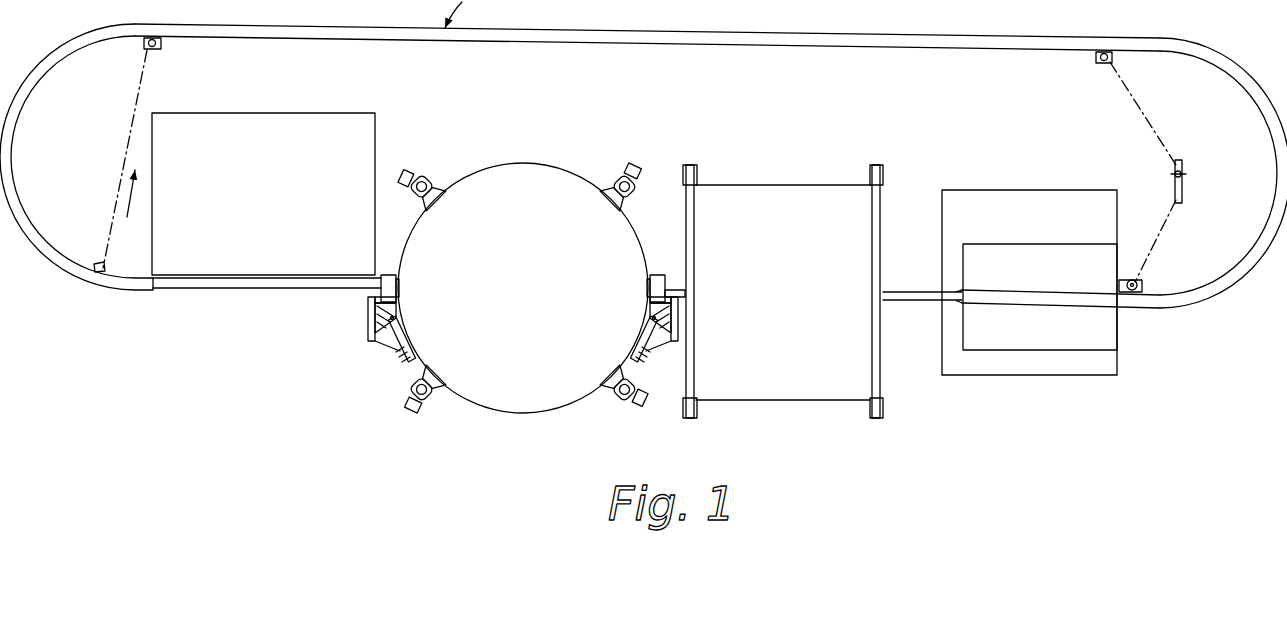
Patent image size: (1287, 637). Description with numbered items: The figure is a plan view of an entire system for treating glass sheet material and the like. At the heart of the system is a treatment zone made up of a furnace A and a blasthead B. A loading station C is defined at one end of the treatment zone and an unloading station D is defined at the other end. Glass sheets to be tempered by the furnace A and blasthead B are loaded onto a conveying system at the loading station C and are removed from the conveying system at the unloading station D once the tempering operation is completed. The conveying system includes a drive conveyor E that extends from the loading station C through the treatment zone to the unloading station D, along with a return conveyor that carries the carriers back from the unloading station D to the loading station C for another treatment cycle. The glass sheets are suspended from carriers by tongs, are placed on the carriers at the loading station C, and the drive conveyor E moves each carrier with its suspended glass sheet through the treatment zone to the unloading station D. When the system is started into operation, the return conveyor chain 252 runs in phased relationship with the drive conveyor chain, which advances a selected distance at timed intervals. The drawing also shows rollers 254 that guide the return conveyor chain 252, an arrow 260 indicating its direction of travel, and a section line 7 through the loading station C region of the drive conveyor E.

The belt guide rollers 254 is at (158, 50).
The return conveyor chain 252 is at (128, 125).
The direction of travel arrow 260 is at (130, 190).
The loading station C is at (360, 112).
The drive conveyor E is at (240, 290).
The section line 7- 7 is at (402, 207).
The furnace A is at (513, 415).
The blasthead B is at (818, 405).
The unloading station D is at (1045, 187).